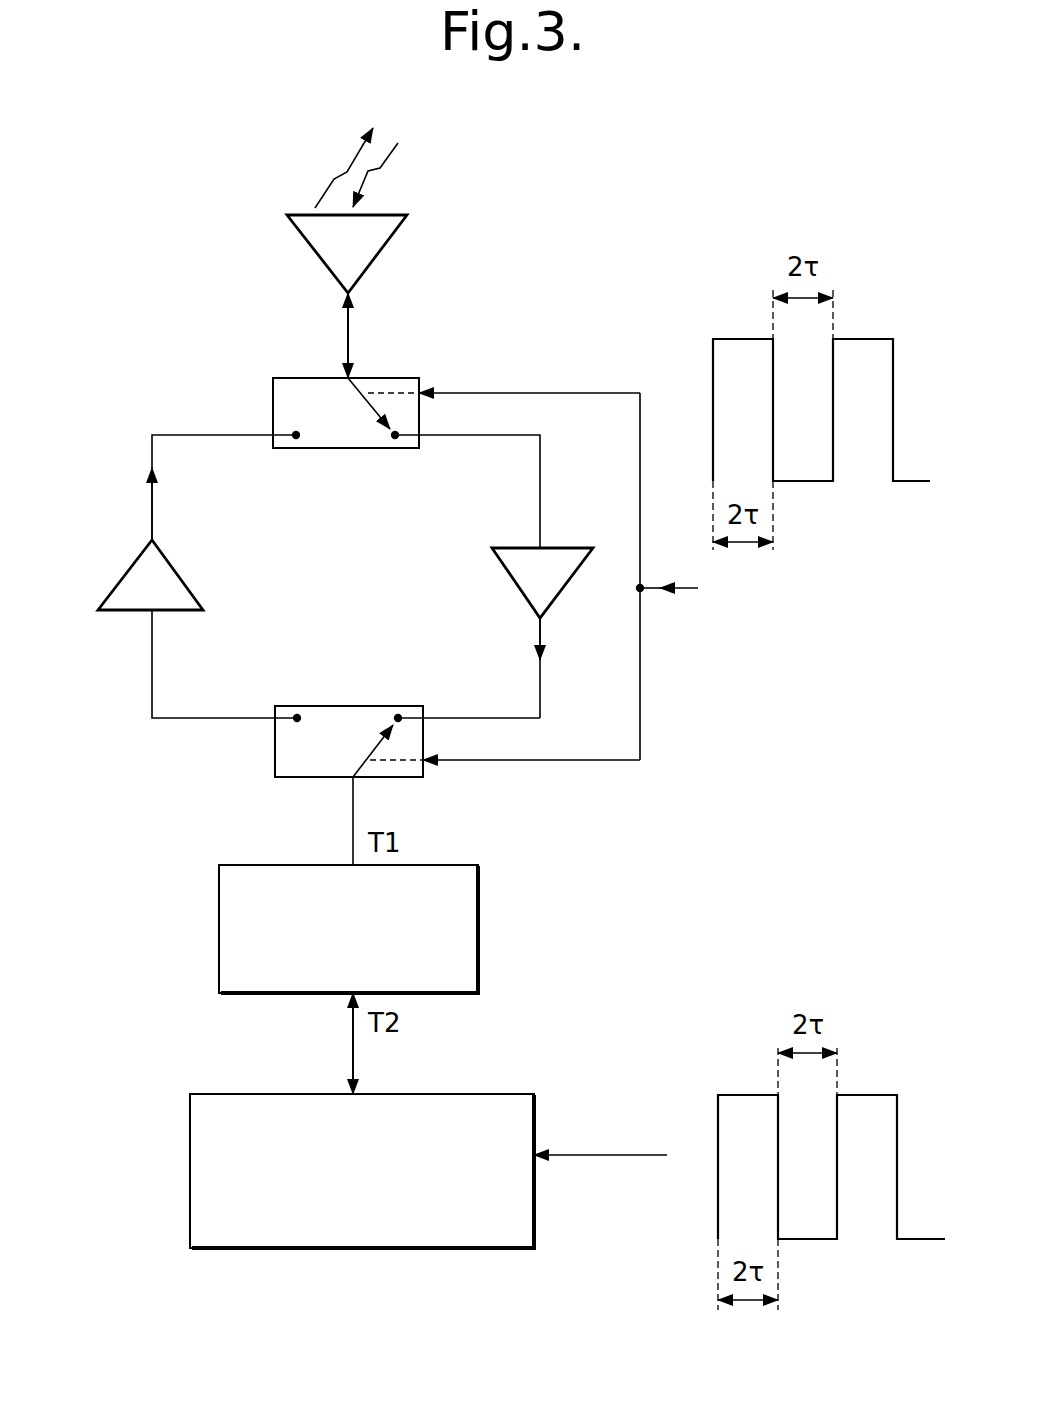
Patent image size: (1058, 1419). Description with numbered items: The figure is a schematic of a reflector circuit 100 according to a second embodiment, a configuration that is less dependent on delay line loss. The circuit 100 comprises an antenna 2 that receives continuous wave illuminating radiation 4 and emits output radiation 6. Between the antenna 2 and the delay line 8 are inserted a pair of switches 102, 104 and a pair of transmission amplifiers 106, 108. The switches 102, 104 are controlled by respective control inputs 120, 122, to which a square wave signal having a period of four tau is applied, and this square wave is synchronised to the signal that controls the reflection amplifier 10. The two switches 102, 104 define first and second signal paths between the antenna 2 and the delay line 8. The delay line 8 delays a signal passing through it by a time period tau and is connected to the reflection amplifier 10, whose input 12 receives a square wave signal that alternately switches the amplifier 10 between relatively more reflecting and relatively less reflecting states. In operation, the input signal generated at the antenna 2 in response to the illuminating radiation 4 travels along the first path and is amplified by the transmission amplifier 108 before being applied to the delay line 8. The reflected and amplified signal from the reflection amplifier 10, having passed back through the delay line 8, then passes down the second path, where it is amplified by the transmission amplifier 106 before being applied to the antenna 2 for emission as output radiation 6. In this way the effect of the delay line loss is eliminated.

The reflector circuit 100 is at (578, 228).
The antenna 2 is at (300, 238).
The illuminating radiation 4 is at (396, 150).
The output radiation 6 is at (336, 178).
The switch 102 is at (283, 400).
The switch 104 is at (285, 755).
The transmission amplifier 106 is at (137, 562).
The transmission amplifier 108 is at (497, 553).
The control input 120 is at (422, 380).
The control input 122 is at (425, 762).
The delay line 8 is at (230, 915).
The reflection amplifier 10 is at (221, 1138).
The input 12 is at (536, 1153).